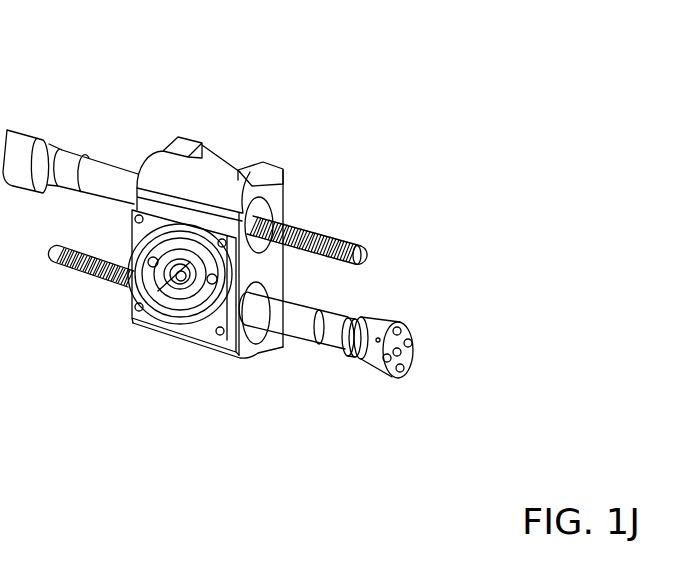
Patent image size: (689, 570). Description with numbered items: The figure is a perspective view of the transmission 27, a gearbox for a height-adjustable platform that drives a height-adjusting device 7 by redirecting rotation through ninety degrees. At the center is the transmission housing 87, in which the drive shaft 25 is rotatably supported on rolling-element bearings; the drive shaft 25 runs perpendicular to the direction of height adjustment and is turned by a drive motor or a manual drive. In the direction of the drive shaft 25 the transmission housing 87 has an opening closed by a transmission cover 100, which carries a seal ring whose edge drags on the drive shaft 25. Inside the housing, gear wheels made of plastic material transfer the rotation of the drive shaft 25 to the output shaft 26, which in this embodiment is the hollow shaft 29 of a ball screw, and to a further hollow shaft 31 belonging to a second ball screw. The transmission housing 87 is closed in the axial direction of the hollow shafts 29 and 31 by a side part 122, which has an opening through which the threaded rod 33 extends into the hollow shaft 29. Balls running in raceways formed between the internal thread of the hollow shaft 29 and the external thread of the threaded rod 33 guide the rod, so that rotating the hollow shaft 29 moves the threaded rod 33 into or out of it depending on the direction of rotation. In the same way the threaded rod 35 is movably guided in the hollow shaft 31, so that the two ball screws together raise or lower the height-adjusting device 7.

The height-adjusting device 7 is at (227, 99).
The drive shaft 25 is at (138, 327).
The output shaft 26 is at (301, 330).
The transmission 27 is at (248, 130).
The hollow shaft 29 is at (377, 387).
The hollow shaft 31 is at (106, 171).
The threaded rod 33 is at (71, 266).
The threaded rod 35 is at (340, 233).
The transmission housing 87 is at (217, 187).
The transmission cover 100 is at (280, 277).
The side part 122 is at (273, 190).